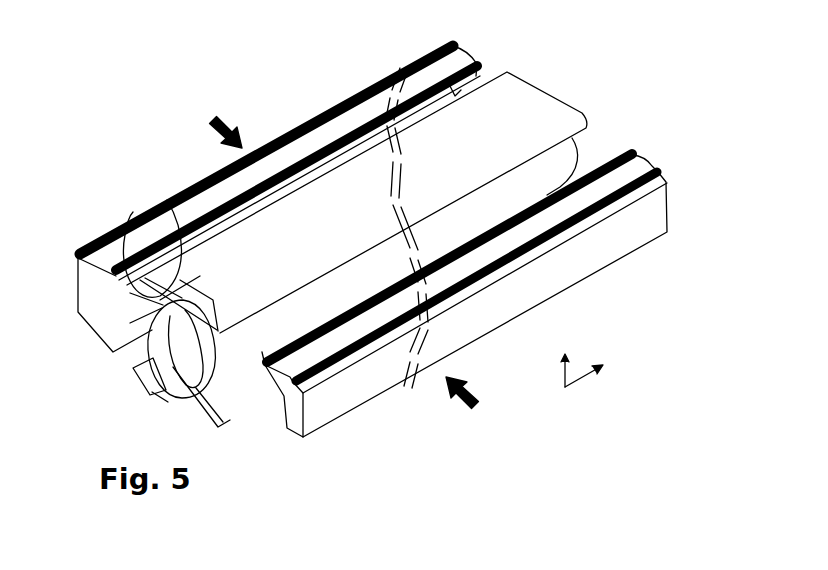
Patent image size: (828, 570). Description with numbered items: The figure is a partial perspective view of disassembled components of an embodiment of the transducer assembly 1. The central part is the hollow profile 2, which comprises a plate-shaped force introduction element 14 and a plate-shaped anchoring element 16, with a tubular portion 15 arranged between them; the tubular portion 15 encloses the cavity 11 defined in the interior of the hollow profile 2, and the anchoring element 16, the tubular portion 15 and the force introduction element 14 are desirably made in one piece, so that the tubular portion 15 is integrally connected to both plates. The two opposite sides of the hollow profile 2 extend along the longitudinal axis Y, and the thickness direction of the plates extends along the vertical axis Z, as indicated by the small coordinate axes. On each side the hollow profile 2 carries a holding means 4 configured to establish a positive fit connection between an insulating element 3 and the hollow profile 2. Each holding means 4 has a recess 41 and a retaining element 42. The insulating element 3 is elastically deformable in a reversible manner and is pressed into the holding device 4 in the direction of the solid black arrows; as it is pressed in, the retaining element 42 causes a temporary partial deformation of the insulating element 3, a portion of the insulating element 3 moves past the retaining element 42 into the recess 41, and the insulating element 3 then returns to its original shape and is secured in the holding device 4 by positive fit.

The transducer assembly 1 is at (146, 102).
The hollow profile 2 is at (600, 88).
The insulating element 3 is at (85, 318).
The holding means 4 is at (148, 302).
The cavity 11 is at (164, 393).
The force introduction element 14 is at (503, 118).
The tubular portion 15 is at (133, 366).
The anchoring element 16 is at (205, 430).
The recess 41 is at (167, 200).
The retaining element 42 is at (145, 292).